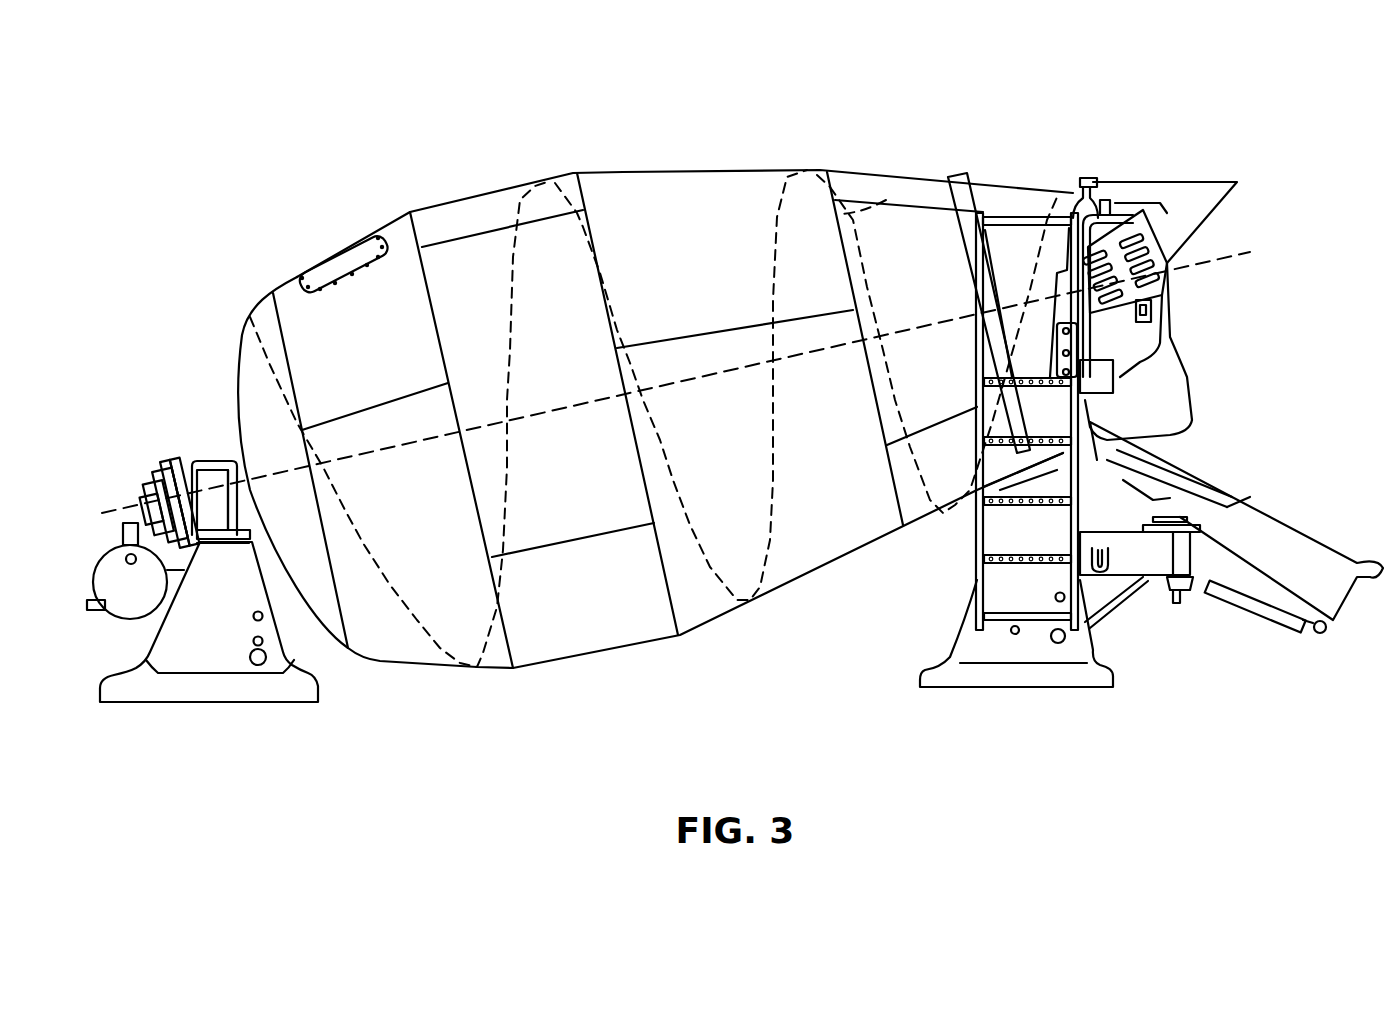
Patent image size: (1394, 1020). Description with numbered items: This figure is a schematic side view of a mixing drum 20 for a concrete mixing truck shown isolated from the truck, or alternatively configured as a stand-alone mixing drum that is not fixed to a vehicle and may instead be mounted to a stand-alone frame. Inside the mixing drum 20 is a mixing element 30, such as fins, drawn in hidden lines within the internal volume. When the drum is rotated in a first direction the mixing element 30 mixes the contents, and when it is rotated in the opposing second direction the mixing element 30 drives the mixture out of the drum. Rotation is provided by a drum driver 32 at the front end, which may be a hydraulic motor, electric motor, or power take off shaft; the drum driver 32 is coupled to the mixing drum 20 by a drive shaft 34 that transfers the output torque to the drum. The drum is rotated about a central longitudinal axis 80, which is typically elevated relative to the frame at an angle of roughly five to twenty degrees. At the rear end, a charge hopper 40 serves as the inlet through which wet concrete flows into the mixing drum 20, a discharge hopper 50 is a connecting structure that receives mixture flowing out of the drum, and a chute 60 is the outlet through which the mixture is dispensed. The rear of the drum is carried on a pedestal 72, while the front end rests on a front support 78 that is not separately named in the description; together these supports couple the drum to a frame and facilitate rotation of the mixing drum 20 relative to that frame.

The mixing drum 20 is at (722, 168).
The mixing element 30 is at (886, 200).
The drum driver 32 is at (157, 477).
The drive shaft 34 is at (240, 462).
The charge hopper 40 is at (1185, 192).
The discharge hopper 50 is at (1173, 388).
The chute 60 is at (1287, 533).
The pedestal 72 is at (993, 580).
The front pedestal 78 is at (220, 675).
The longitudinal axis 80 is at (1250, 252).